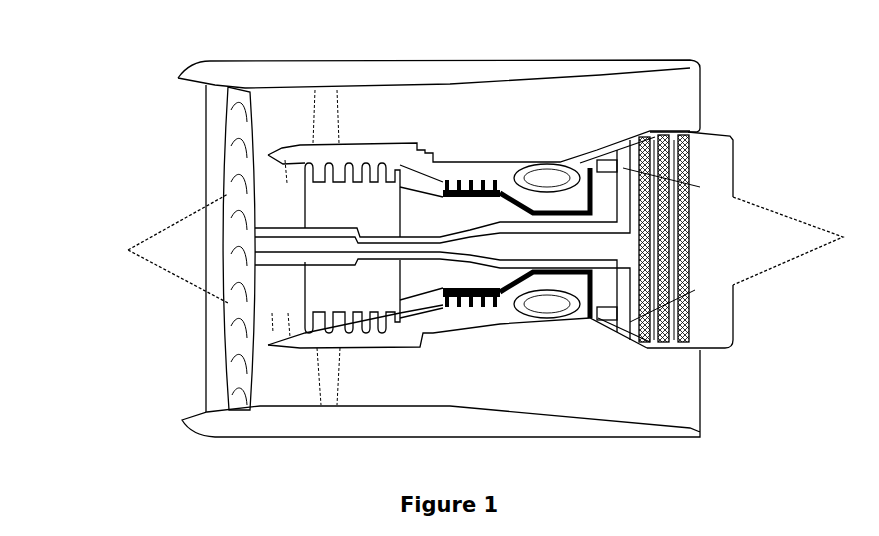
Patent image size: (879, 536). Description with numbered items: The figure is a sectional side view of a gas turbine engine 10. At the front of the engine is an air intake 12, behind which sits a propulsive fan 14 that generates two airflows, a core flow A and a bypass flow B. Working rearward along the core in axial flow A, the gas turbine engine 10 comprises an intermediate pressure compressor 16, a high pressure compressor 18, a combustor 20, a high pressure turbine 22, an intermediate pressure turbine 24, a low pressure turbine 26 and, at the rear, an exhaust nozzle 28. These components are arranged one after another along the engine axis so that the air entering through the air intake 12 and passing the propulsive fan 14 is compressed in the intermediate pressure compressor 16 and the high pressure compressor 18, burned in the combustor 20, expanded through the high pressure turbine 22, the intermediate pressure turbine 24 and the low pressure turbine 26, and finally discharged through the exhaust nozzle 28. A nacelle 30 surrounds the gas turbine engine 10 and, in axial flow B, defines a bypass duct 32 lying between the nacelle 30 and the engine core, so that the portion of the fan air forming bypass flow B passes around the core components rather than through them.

The gas turbine engine 10 is at (148, 53).
The air intake 12 is at (205, 107).
The propulsive fan 14 is at (228, 92).
The intermediate pressure compressor 16 is at (347, 190).
The high pressure compressor 18 is at (463, 180).
The combustor 20 is at (550, 173).
The high pressure turbine 22 is at (588, 163).
The intermediate pressure turbine 24 is at (641, 147).
The low pressure turbine 26 is at (688, 142).
The exhaust nozzle 28 is at (727, 163).
The nacelle 30 is at (298, 86).
The bypass duct 32 is at (502, 131).
The axial flow A is at (260, 171).
The axial flow B is at (272, 127).